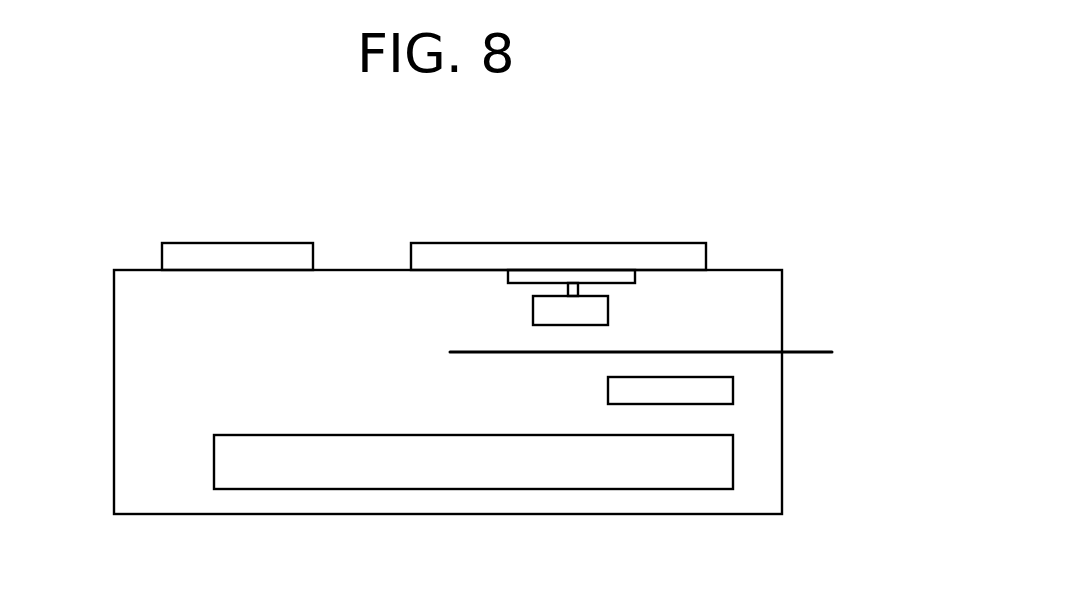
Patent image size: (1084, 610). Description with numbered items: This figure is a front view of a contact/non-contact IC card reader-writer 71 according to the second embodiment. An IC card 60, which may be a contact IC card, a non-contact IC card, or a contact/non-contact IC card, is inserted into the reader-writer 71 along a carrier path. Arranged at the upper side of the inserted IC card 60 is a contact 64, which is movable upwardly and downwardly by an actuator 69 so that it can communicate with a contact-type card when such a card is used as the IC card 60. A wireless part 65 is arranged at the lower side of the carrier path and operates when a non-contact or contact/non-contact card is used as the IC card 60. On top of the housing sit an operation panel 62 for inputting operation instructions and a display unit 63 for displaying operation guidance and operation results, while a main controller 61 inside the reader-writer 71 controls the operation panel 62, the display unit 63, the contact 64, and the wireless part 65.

The contact/non-contact IC card reader-writer 71 is at (760, 256).
The IC card 60 is at (812, 350).
The main controller 61 is at (733, 460).
The operation panel 62 is at (508, 243).
The display unit 63 is at (254, 243).
The contact 64 is at (612, 309).
The wireless part 65 is at (733, 388).
The actuator 69 is at (560, 277).